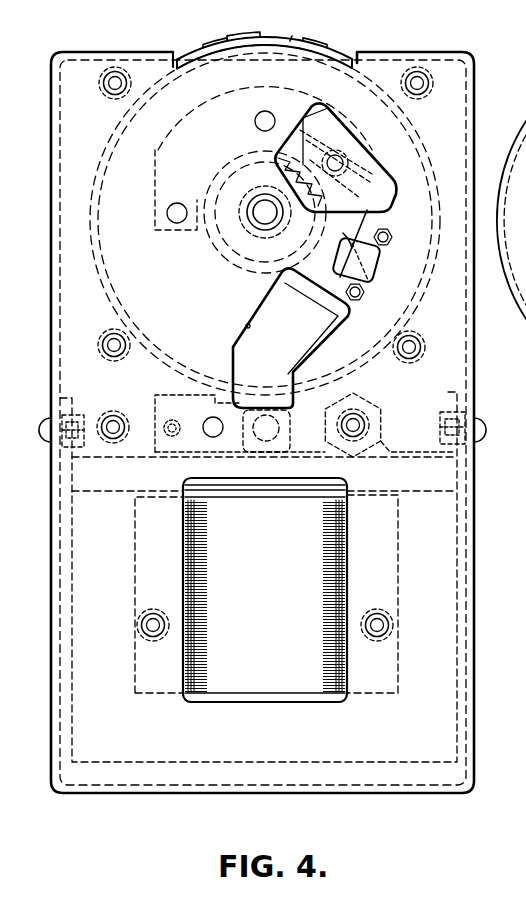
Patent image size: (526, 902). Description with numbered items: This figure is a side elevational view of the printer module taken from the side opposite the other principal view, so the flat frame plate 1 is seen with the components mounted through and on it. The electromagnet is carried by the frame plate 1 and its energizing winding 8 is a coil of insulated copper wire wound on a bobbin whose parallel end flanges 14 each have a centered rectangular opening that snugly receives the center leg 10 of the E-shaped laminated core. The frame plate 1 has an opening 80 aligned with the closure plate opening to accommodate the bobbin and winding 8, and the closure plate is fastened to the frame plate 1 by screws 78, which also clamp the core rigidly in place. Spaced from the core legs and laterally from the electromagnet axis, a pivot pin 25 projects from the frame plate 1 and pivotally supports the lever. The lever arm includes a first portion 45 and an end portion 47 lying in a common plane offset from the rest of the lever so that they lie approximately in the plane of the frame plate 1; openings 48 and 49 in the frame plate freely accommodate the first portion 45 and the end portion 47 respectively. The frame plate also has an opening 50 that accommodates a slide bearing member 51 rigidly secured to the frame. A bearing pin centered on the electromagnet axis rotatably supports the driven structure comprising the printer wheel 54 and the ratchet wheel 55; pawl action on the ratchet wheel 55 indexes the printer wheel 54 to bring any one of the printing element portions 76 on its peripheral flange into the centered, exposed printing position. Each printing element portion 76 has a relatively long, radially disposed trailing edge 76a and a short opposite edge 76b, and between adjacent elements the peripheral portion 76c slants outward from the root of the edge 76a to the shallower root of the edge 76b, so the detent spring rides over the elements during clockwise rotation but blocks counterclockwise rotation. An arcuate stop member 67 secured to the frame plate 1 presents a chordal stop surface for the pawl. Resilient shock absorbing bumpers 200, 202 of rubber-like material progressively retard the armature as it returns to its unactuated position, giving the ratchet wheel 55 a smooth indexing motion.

The frame plate 1 is at (458, 374).
The energizing winding 8 is at (267, 611).
The center leg 10 is at (250, 498).
The end flanges 14 is at (303, 500).
The pivot pin 25 is at (211, 418).
The first portion 45 is at (290, 347).
The end portion 47 is at (320, 130).
The opening 48 is at (246, 325).
The opening 49 is at (392, 196).
The opening 50 is at (374, 258).
The slide bearing member 51 is at (366, 270).
The printer wheel 54 is at (296, 33).
The ratchet wheel 55 is at (284, 219).
The arcuate stop member 67 is at (190, 132).
The printing element portions 76 is at (262, 38).
The trailing edge 76a is at (251, 37).
The opposite edge 76b is at (326, 48).
The peripheral portion 76c is at (237, 44).
The screws 78 is at (388, 622).
The opening 80 is at (195, 578).
The shock absorbing bumper 200 is at (74, 402).
The shock absorbing bumper 202 is at (455, 392).